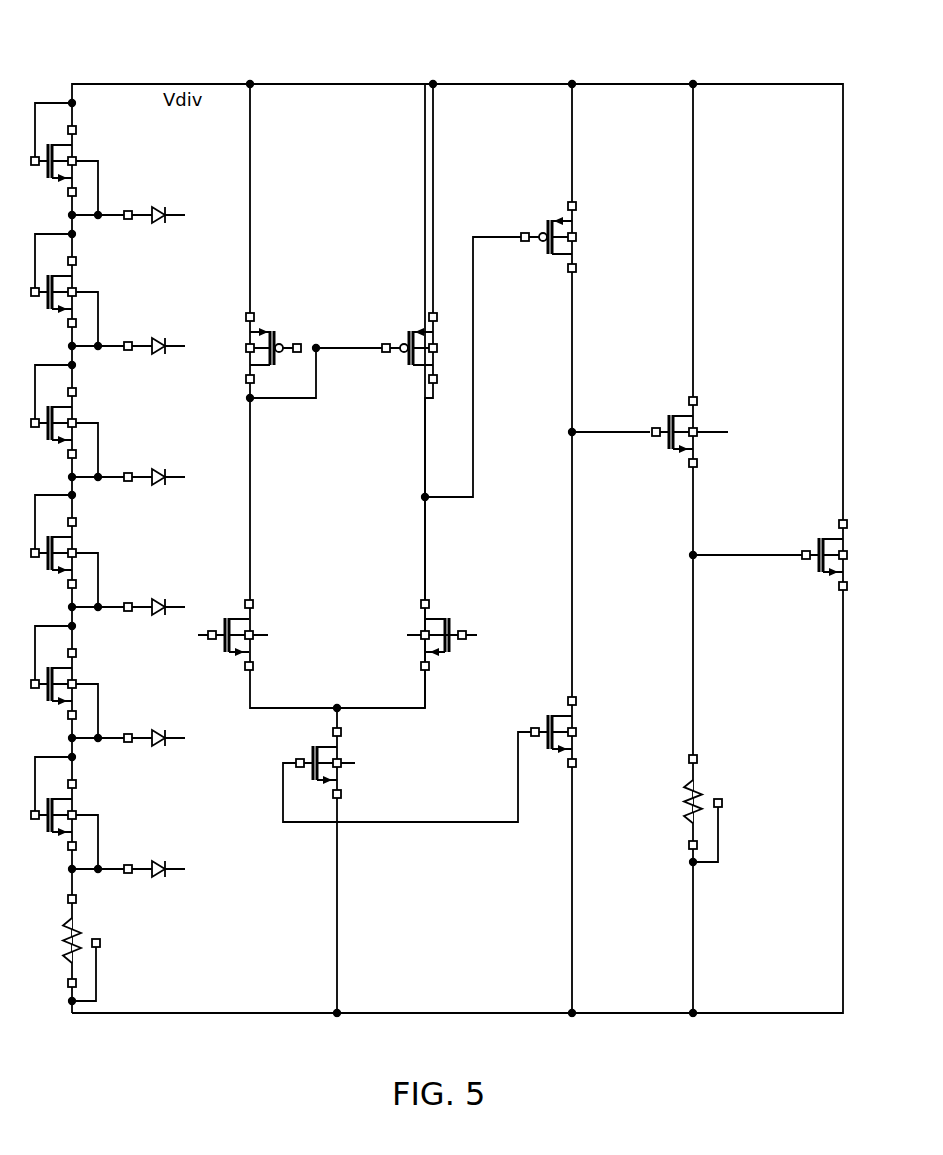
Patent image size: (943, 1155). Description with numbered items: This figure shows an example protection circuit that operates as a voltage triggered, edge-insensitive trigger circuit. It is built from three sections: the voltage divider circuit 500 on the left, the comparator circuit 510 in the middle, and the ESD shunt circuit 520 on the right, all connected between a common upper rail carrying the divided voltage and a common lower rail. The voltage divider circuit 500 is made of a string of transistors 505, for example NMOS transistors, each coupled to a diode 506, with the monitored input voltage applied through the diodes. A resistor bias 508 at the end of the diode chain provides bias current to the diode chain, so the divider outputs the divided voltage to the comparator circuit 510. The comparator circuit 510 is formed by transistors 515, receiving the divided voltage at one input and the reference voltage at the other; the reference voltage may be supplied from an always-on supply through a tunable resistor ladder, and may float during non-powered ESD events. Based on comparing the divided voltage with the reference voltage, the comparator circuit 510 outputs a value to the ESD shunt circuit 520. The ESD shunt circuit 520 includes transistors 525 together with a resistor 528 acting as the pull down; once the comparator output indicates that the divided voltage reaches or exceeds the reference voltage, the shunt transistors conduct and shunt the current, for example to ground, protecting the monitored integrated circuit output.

The voltage divider circuit 500 is at (170, 54).
The transistors 505 is at (90, 139).
The diodes 506 is at (155, 190).
The resistor bias 508 is at (105, 913).
The comparator circuit 510 is at (335, 54).
The transistors 515 is at (275, 299).
The ESD shunt circuit 520 is at (643, 54).
The transistors 525 is at (597, 214).
The resistor 528 is at (724, 773).